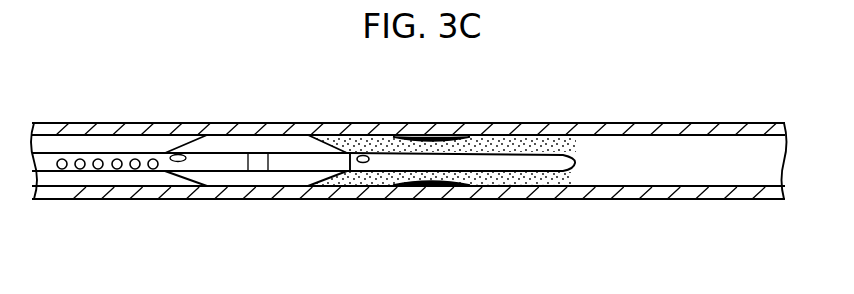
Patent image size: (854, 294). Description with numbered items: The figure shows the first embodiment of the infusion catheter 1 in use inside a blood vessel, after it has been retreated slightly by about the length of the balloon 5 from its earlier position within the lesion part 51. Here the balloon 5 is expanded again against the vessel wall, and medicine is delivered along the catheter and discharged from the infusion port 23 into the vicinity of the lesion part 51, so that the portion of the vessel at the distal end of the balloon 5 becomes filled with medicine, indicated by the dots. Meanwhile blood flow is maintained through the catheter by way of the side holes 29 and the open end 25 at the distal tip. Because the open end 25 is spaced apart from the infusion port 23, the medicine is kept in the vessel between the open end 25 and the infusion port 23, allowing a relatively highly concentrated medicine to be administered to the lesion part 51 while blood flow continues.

The infusion catheter 1 is at (133, 152).
The balloon 5 is at (262, 152).
The side holes 29 is at (117, 170).
The infusion port 23 is at (362, 163).
The lesion part 51 is at (440, 186).
The open end 25 is at (577, 163).